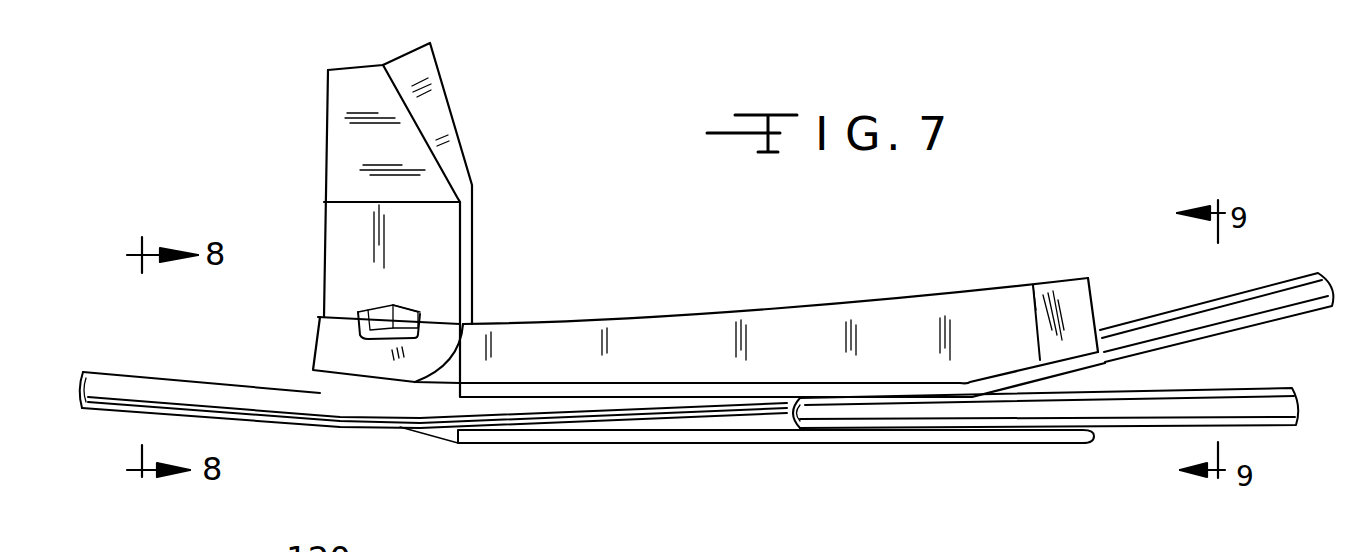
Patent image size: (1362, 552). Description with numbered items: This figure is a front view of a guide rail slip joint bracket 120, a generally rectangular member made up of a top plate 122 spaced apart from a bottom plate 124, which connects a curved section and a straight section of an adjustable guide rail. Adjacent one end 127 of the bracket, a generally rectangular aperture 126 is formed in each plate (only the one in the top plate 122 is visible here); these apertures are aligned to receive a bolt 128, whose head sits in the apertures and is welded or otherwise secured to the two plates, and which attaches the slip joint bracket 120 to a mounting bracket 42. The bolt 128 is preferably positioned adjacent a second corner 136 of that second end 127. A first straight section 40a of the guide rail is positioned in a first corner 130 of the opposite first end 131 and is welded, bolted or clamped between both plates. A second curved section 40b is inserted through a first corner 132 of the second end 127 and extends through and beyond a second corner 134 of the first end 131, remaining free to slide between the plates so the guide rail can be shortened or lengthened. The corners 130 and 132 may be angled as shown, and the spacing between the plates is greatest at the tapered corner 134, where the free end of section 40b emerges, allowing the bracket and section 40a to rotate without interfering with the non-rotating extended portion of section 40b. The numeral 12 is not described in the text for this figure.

The end portion 12 is at (1062, 283).
The first straight section of the guide rail 40a is at (1265, 428).
The second curved section of the guide rail 40b is at (125, 412).
The mounting bracket 42 is at (430, 105).
The guide rail slip joint bracket 120 is at (1038, 200).
The top plate 122 is at (702, 322).
The bottom plate 124 is at (907, 443).
The aperture 126 is at (420, 311).
The second end of the slip joint bracket 127 is at (318, 342).
The bolt 128 is at (377, 318).
The first corner of the first end 130 is at (967, 383).
The first end of the slip joint bracket 131 is at (1033, 300).
The first corner of the second end 132 is at (463, 323).
The second corner of the first end 134 is at (1093, 300).
The second corner of the second end 136 is at (320, 322).